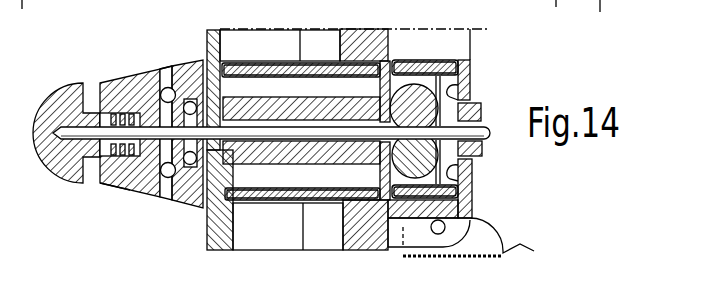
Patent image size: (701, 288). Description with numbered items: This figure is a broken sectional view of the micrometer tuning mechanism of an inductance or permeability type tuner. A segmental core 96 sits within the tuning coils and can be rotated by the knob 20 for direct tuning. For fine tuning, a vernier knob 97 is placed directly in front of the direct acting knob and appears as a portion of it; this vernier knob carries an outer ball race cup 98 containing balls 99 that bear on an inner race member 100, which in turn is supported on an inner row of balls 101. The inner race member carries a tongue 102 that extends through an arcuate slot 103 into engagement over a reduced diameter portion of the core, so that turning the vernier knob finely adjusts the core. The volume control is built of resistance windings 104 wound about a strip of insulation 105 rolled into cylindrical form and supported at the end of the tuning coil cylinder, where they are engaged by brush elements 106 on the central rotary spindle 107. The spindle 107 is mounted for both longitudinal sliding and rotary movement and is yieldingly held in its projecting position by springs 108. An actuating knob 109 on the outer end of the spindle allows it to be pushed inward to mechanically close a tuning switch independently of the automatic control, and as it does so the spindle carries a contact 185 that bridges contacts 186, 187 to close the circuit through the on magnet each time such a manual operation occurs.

The knob 20 is at (167, 83).
The segmental core 96 is at (318, 165).
The vernier knob 97 is at (103, 186).
The outer ball race cup 98 is at (158, 198).
The balls 99 is at (163, 87).
The inner race member 100 is at (190, 100).
The inner row of balls 101 is at (185, 208).
The tongue 102 is at (253, 97).
The arcuate slot 103 is at (254, 85).
The resistance windings 104 is at (383, 170).
The strip of insulation 105 is at (430, 61).
The brush elements 106 is at (412, 83).
The central rotary spindle 107 is at (250, 133).
The springs 108 is at (117, 191).
The actuating knobs 109 is at (38, 97).
The contact 185 is at (458, 220).
The contact 186 is at (472, 83).
The contact 187 is at (472, 172).